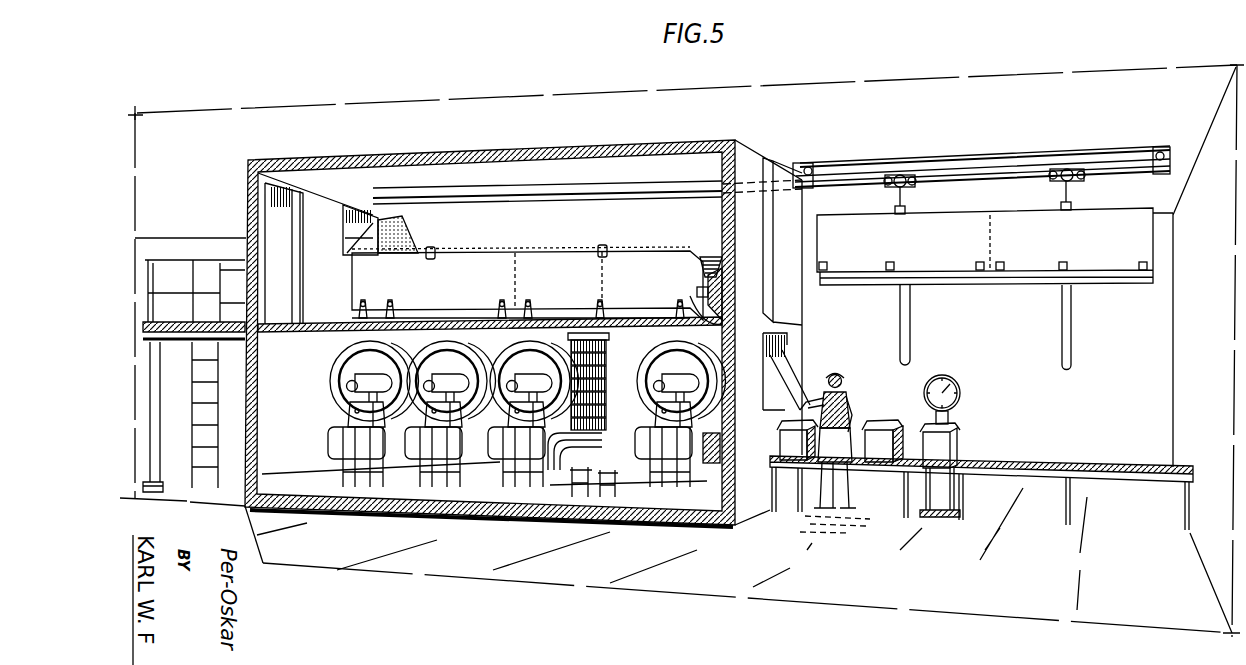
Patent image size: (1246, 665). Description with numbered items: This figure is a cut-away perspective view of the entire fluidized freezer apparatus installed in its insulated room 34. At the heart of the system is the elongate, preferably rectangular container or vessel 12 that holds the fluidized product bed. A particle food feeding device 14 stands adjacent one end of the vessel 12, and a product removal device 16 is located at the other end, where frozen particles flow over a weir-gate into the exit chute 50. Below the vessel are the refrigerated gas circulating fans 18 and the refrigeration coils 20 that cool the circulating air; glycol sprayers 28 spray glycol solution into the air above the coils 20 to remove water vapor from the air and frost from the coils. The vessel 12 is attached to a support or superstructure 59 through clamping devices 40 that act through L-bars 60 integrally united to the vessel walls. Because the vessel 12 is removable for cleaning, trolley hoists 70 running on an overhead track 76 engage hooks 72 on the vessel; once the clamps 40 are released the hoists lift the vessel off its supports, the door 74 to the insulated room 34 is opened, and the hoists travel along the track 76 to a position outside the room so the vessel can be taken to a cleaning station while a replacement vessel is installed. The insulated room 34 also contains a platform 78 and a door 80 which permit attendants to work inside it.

The container or vessel 12 is at (493, 248).
The particle food feeding device 14 is at (382, 216).
The product removal device 16 is at (709, 252).
The refrigerated gas circulating fans 18 is at (379, 369).
The refrigeration coils 20 is at (605, 424).
The glycol sprayers 28 is at (583, 336).
The insulated room 34 is at (245, 492).
The clamping devices 40 is at (393, 299).
The exit chute 50 is at (715, 316).
The support or superstructure 59 is at (633, 373).
The L-bars 60 is at (888, 262).
The trolley hoists 70 is at (903, 176).
The hooks 72 is at (435, 248).
The door 74 is at (795, 310).
The track 76 is at (1113, 166).
The platform 78 is at (317, 333).
The door 80 is at (292, 299).